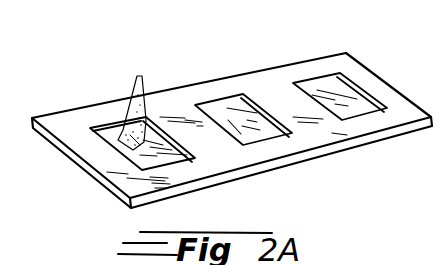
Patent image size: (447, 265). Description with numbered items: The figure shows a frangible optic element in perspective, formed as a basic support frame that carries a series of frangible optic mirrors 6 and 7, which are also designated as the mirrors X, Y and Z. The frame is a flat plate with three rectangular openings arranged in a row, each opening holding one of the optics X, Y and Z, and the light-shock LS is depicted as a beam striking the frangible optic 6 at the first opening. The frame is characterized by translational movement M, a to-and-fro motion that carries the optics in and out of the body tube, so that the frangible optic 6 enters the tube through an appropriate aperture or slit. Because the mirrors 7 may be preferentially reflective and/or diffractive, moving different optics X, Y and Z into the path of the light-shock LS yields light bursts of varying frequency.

The frangible optic 6 is at (135, 148).
The frangible optic mirror 7 is at (243, 122).
The light-shock LS is at (145, 118).
The translational motion M is at (223, 31).
The frangible optic mirror X is at (215, 164).
The frangible optic mirror Y is at (307, 137).
The frangible optic mirror Z is at (397, 116).